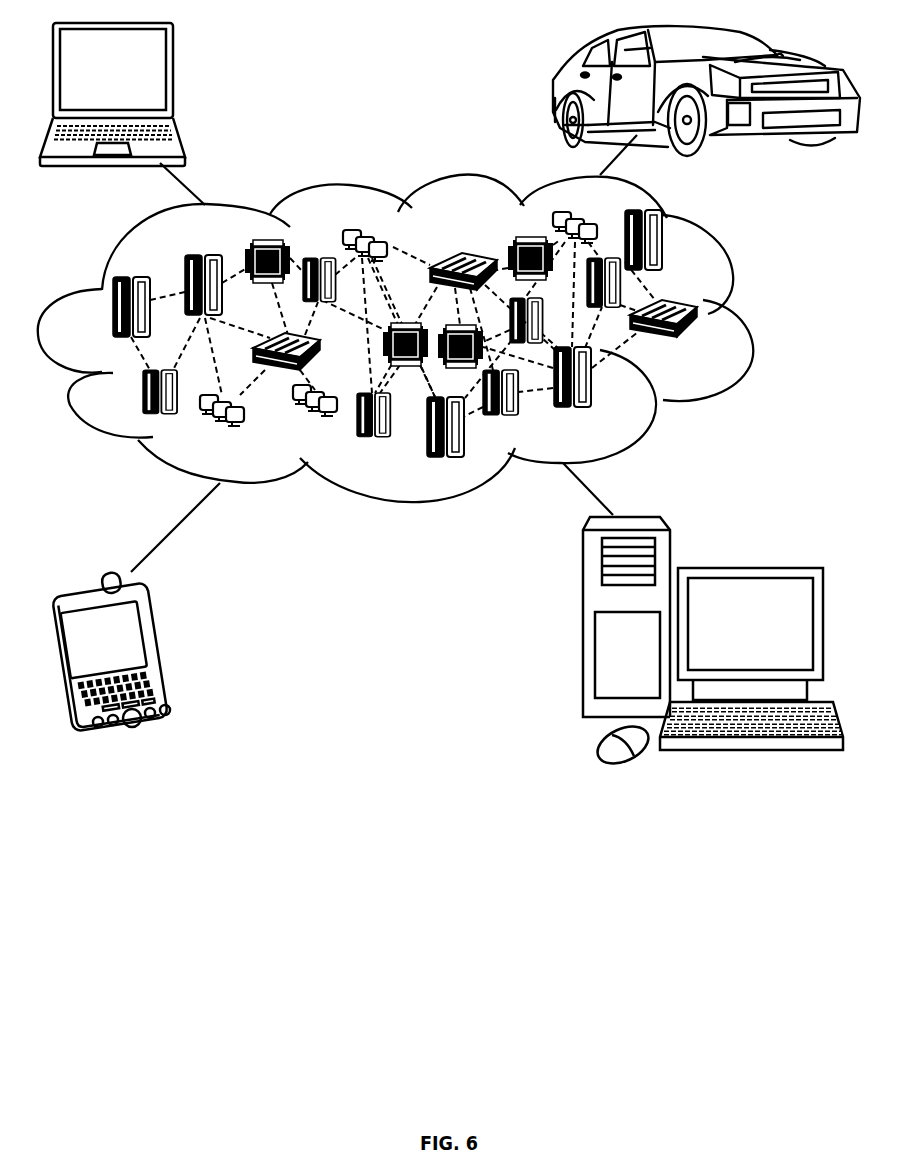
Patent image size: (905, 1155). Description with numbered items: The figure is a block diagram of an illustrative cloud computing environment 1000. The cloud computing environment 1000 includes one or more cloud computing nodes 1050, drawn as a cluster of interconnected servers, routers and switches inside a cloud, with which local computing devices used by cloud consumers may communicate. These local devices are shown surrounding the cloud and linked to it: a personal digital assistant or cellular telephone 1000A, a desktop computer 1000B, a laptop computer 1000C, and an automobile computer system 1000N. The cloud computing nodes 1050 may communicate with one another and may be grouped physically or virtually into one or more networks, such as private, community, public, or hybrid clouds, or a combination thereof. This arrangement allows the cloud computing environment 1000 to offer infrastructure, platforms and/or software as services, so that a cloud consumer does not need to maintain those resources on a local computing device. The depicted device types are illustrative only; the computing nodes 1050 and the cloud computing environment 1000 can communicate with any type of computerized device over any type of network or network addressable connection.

The cloud computing environment 1000 is at (750, 318).
The cloud computing nodes 1050 is at (704, 343).
The personal digital assistant (PDA) or cellular telephone 1000A is at (168, 650).
The desktop computer 1000B is at (747, 568).
The laptop computer 1000C is at (176, 72).
The automobile computer system 1000N is at (556, 87).